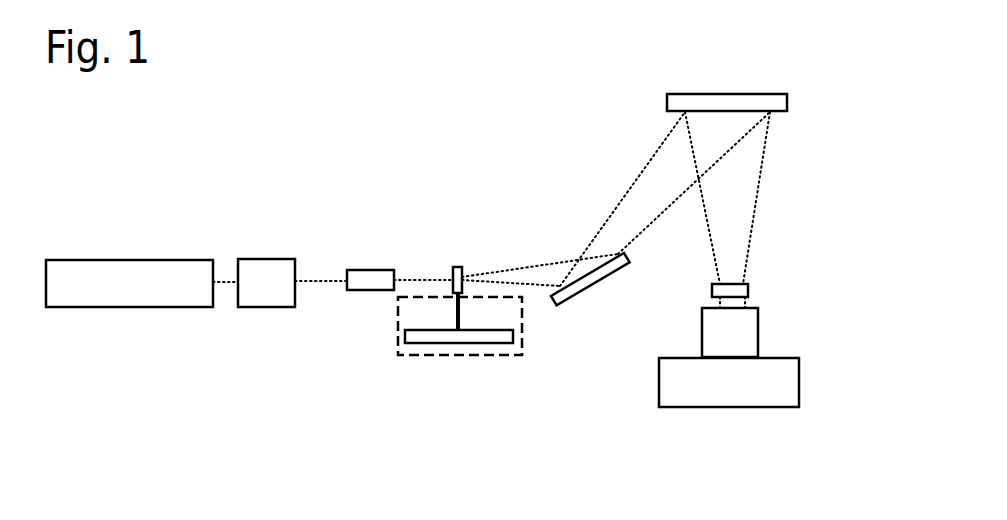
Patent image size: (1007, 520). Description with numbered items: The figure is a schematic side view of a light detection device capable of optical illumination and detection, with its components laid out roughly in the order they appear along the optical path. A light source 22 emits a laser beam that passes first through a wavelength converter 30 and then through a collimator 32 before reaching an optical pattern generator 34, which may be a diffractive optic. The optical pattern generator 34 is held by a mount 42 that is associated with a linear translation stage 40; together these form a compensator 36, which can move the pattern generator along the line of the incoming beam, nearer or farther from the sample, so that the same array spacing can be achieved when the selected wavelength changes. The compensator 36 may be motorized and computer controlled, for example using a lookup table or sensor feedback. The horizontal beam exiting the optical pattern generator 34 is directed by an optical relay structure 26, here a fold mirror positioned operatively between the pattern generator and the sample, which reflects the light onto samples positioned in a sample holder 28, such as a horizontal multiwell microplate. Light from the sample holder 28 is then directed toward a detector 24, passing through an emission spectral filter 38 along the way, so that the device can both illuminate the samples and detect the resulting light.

The light source 22 is at (123, 310).
The wavelength converter 30 is at (268, 310).
The collimator 32 is at (363, 290).
The optical pattern generator 34 is at (458, 267).
The mount 42 is at (455, 307).
The compensator 36 is at (422, 357).
The linear translation stage 40 is at (498, 343).
The optical relay structure 26 is at (587, 297).
The sample holder 28 is at (687, 92).
The emission spectral filter 38 is at (752, 292).
The detector 24 is at (652, 385).